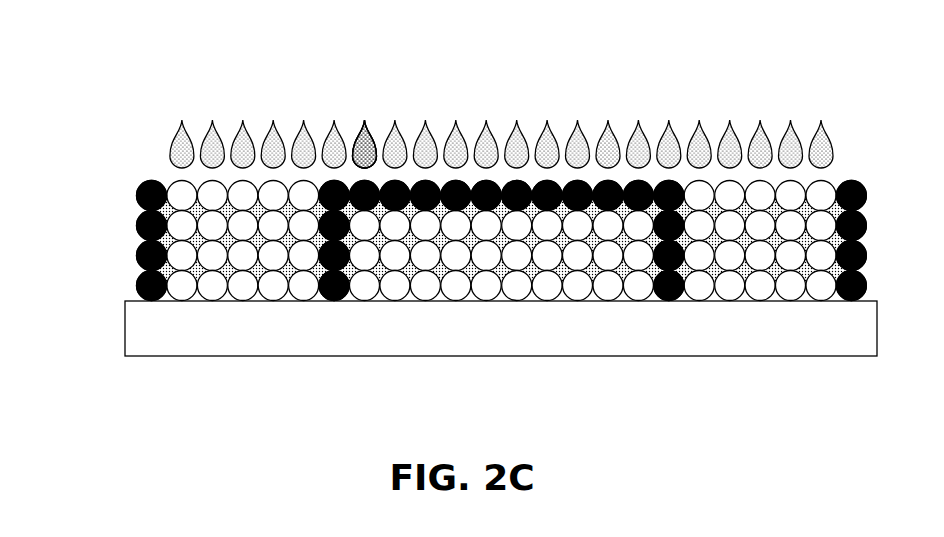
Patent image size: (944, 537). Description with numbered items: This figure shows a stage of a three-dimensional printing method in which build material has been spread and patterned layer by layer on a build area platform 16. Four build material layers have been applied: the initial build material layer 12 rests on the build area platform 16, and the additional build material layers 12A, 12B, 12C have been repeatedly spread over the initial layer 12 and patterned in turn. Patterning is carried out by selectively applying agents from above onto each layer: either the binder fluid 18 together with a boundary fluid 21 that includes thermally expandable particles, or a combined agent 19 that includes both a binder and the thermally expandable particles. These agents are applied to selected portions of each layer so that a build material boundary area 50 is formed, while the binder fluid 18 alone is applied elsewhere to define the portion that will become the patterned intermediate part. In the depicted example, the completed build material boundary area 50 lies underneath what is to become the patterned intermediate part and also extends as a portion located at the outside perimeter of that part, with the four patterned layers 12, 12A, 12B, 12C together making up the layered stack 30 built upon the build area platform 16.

The initial build material layer 12 is at (120, 283).
The build material layer 12A is at (120, 252).
The build material layer 12B is at (120, 222).
The build material layer 12C is at (120, 190).
The build area platform 16 is at (168, 330).
The binder fluid 18 is at (181, 155).
The combined agent 19 is at (333, 90).
The boundary fluid 21 is at (386, 90).
The particle bed / layered build 30 is at (879, 180).
The build material boundary area 50 is at (132, 166).